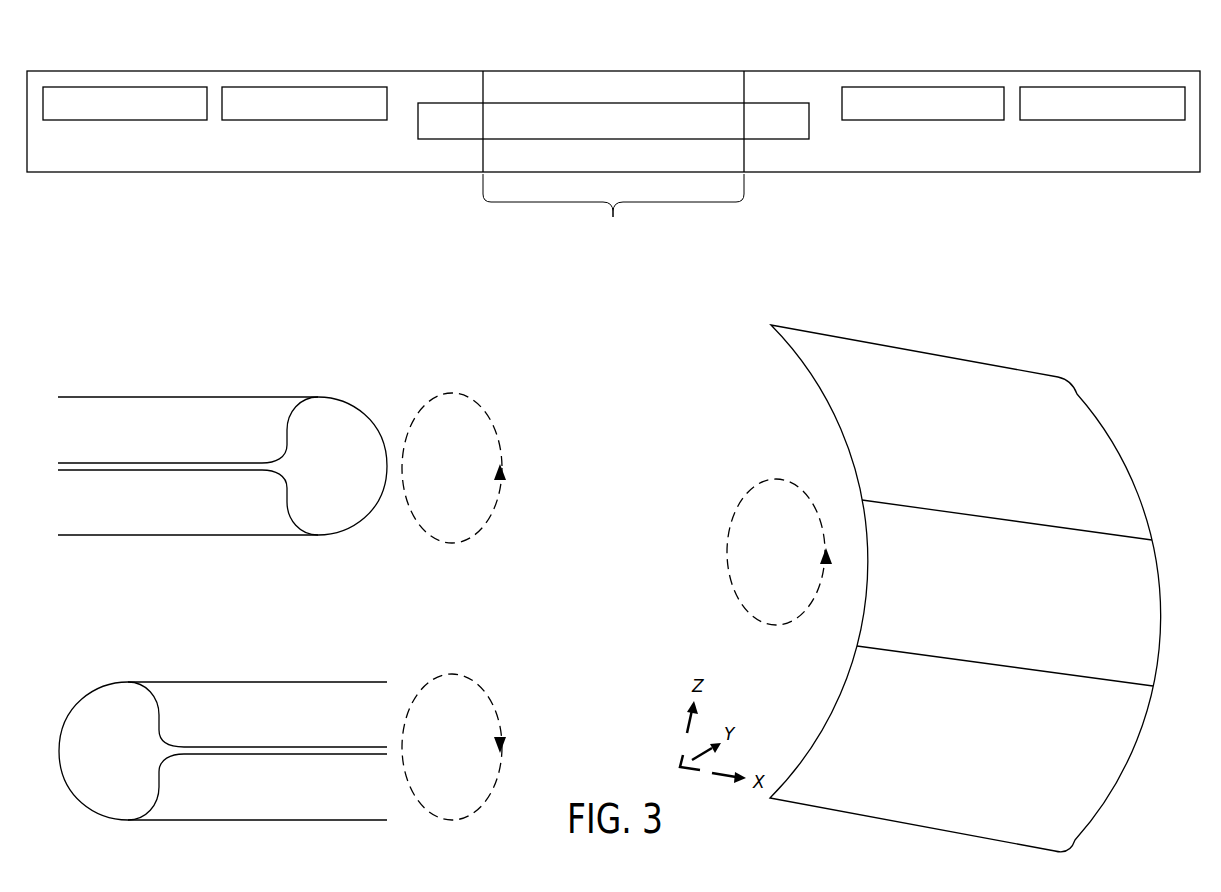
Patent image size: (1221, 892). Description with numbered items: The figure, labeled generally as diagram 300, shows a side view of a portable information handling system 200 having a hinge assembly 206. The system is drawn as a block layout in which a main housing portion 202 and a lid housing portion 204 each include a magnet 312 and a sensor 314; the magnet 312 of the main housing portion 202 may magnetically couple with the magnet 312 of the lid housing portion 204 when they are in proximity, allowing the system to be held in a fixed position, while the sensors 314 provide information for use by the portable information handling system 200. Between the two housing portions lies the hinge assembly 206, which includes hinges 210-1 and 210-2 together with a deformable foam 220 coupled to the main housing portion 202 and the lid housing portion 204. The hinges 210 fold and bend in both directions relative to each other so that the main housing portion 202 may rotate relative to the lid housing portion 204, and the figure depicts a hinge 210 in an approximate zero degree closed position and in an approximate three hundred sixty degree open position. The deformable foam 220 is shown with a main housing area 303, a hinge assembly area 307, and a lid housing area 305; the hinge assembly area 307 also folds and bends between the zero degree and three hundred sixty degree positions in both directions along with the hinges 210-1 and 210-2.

The hinge configuration diagram 300 is at (108, 50).
The portable information handling system 200 is at (613, 99).
The main housing portion 202 is at (382, 154).
The lid housing portion 204 is at (1090, 154).
The hinge assembly 206 is at (613, 216).
The hinges 210 is at (228, 443).
The first hinge 210-1 is at (668, 96).
The second hinge 210-2 is at (667, 163).
The deformable foam 220 is at (720, 130).
The magnet 312 is at (183, 114).
The sensor 314 is at (362, 114).
The main housing area 303 is at (965, 588).
The lid housing area 305 is at (945, 797).
The hinge assembly area 307 is at (940, 582).